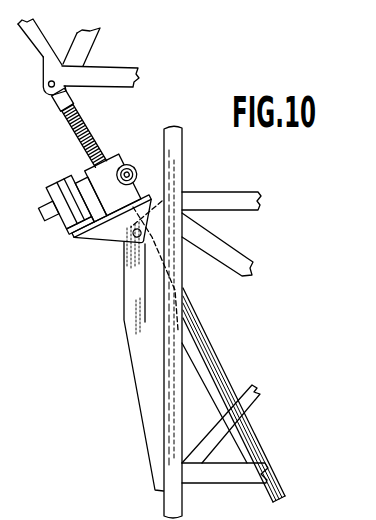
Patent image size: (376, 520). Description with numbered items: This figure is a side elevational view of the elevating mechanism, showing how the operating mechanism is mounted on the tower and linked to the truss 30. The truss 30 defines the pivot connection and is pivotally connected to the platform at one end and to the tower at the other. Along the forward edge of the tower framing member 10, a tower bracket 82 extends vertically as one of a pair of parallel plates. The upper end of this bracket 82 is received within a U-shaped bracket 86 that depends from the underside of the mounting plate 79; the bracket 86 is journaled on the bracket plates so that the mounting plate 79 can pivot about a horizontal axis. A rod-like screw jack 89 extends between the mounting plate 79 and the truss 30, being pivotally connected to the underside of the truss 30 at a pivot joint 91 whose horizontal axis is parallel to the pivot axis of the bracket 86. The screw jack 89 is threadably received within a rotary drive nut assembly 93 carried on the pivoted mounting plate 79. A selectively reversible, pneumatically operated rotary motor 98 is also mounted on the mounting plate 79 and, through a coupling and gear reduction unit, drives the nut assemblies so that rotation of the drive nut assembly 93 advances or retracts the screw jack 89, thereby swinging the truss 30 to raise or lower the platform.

The tower framing member 10 is at (178, 281).
The truss 30 is at (74, 79).
The mounting plate 79 is at (148, 191).
The tower bracket 82 is at (134, 341).
The U-shaped bracket 86 is at (92, 239).
The screw jack 89 is at (74, 134).
The pivot joint 91 is at (49, 87).
The rotary drive nut assembly 93 is at (121, 167).
The rotary motor 98 is at (52, 212).